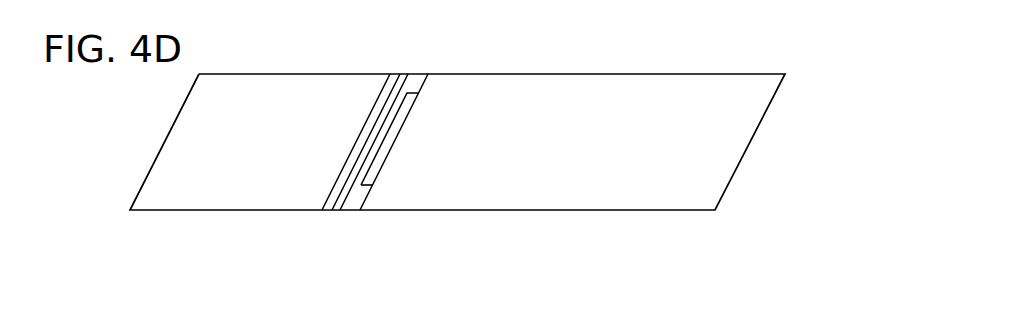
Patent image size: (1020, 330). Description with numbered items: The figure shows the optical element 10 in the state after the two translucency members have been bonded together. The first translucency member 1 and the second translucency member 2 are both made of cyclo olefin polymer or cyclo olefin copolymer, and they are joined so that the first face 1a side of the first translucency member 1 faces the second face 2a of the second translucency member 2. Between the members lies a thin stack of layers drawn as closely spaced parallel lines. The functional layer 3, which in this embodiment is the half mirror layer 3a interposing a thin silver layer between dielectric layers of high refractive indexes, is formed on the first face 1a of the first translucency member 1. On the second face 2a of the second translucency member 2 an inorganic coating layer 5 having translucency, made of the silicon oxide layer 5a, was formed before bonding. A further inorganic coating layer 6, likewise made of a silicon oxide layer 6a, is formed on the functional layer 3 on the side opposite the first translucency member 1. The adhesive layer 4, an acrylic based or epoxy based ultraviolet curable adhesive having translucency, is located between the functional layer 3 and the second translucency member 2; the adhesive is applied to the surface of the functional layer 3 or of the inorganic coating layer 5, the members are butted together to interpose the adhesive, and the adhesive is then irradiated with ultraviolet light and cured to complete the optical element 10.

The optical element 10 is at (686, 62).
The first translucency member 1 is at (515, 203).
The first face 1a is at (373, 185).
The second translucency member 2 is at (198, 200).
The second face 2a is at (330, 187).
The functional layer 3 is at (423, 191).
The half mirror layer 3a is at (394, 140).
The adhesive layer 4 is at (345, 210).
The inorganic coating layer 5 is at (349, 186).
The silicon oxide layer 5a is at (335, 206).
The inorganic coating layer 6 is at (429, 185).
The silicon oxide layer 6a is at (417, 90).